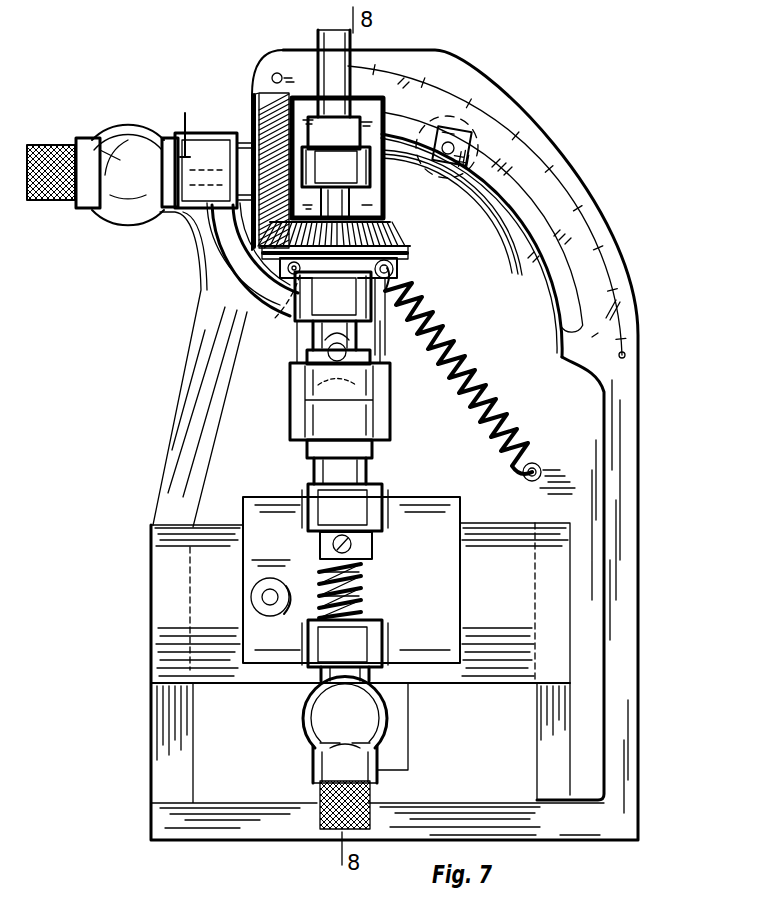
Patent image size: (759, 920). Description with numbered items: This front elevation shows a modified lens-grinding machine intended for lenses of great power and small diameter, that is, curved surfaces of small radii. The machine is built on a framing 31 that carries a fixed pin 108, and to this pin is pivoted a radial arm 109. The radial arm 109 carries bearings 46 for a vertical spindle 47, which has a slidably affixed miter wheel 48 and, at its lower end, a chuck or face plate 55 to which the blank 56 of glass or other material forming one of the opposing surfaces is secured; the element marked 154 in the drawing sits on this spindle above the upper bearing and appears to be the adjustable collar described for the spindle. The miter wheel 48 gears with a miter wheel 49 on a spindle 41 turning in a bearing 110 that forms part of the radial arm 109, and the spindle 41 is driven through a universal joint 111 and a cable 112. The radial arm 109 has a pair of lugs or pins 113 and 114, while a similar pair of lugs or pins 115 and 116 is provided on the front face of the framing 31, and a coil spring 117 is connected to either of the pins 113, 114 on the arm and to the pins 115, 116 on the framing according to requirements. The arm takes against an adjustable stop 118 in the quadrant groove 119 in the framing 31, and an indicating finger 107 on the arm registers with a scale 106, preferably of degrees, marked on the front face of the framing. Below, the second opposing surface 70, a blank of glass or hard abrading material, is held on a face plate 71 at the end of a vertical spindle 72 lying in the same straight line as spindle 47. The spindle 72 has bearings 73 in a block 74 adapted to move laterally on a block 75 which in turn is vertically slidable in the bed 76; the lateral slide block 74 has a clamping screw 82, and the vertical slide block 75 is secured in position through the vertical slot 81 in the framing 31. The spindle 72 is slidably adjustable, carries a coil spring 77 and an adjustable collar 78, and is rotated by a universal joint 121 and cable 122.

The framing 31 is at (394, 445).
The spindle 41 is at (178, 129).
The bearings 46 is at (333, 234).
The vertical spindle 47 is at (352, 212).
The miter wheel 48 is at (400, 240).
The miter wheel 49 is at (250, 105).
The chuck or face plate 55 is at (335, 356).
The blank 56 is at (337, 391).
The second opposing surface 70 is at (340, 401).
The face plate 71 is at (312, 467).
The vertical spindle 72 is at (365, 573).
The bearings 73 is at (345, 575).
The lateral slide block 74 is at (351, 580).
The vertical slide block 75 is at (506, 593).
The bed 76 is at (196, 740).
The coil spring 77 is at (362, 595).
The adjustable collar 78 is at (372, 545).
The vertical slot 81 is at (405, 720).
The clamping screw 82 is at (252, 597).
The scale 106 is at (400, 73).
The indicating finger 107 is at (327, 72).
The fixed pin 108 is at (310, 358).
The radial arm 109 is at (379, 170).
The bearing 110 is at (213, 170).
The universal joint 111 is at (127, 175).
The cable 112 is at (44, 200).
The lug or pin 113 is at (290, 277).
The lug or pin 114 is at (400, 270).
The lug or pin 115 is at (272, 73).
The lug or pin 116 is at (543, 470).
The coil spring 117 is at (447, 338).
The adjustable stop 118 is at (478, 154).
The quadrant groove 119 is at (550, 263).
The universal joint 121 is at (345, 725).
The cable 122 is at (318, 792).
The bearing cap 154 is at (334, 133).